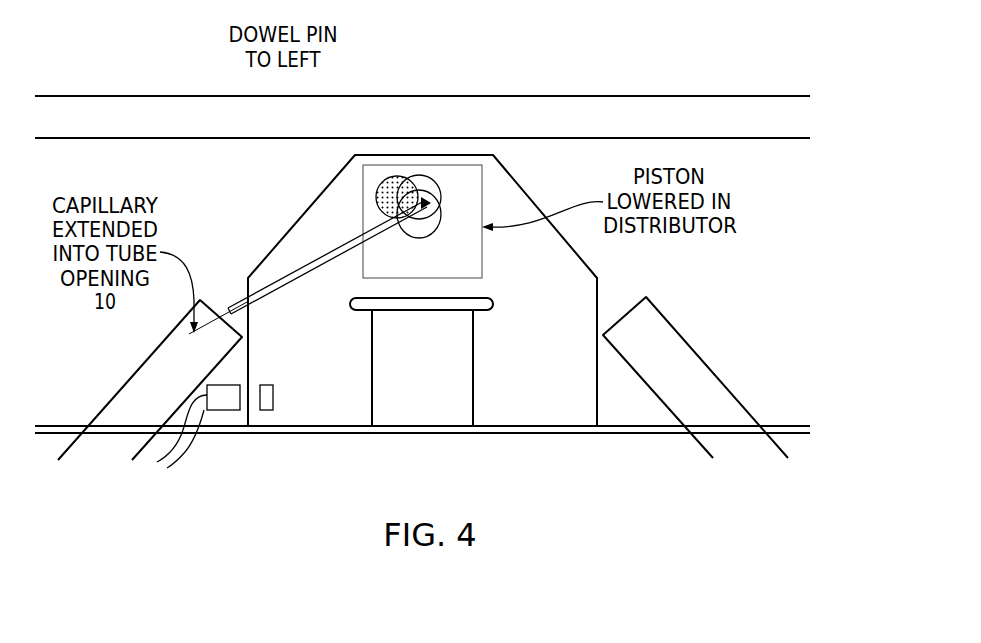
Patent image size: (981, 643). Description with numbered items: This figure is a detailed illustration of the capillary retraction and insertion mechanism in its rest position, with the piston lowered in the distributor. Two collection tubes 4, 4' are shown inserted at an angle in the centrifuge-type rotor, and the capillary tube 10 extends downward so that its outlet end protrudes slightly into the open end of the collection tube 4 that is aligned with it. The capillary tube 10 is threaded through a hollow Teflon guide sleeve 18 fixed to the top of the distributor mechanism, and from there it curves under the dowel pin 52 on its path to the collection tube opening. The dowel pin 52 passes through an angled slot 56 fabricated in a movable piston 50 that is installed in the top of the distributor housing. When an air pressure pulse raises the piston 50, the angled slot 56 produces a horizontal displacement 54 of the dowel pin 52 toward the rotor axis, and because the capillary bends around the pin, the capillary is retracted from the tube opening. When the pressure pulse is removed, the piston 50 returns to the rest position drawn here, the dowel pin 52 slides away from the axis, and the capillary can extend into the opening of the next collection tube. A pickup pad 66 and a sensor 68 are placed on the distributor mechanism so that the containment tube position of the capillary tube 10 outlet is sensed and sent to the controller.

The collection tube 4 is at (150, 380).
The collection tube 4' is at (695, 377).
The capillary tube 10 is at (423, 195).
The guide sleeve 18 is at (231, 307).
The piston 50 is at (410, 373).
The dowel pin 52 is at (393, 178).
The horizontal displacement 54 is at (440, 197).
The angled slot 56 is at (441, 230).
The pickup pad 66 is at (274, 397).
The sensor 68 is at (227, 411).